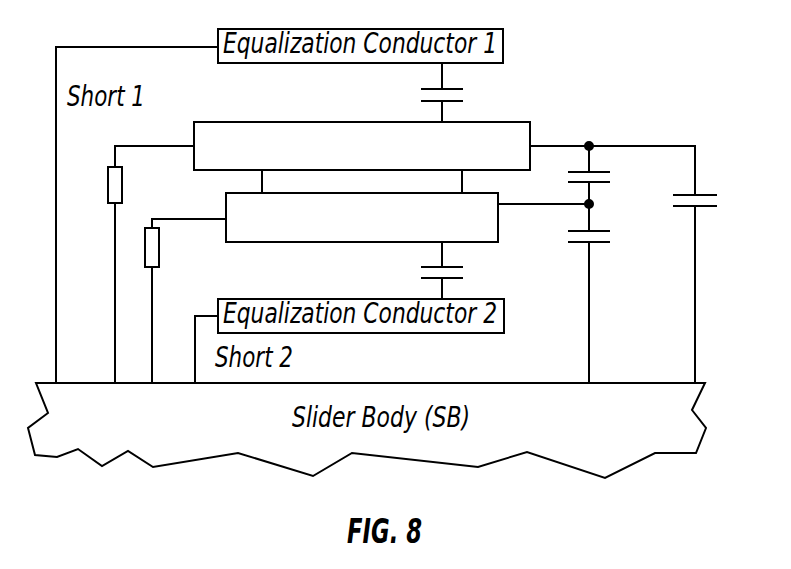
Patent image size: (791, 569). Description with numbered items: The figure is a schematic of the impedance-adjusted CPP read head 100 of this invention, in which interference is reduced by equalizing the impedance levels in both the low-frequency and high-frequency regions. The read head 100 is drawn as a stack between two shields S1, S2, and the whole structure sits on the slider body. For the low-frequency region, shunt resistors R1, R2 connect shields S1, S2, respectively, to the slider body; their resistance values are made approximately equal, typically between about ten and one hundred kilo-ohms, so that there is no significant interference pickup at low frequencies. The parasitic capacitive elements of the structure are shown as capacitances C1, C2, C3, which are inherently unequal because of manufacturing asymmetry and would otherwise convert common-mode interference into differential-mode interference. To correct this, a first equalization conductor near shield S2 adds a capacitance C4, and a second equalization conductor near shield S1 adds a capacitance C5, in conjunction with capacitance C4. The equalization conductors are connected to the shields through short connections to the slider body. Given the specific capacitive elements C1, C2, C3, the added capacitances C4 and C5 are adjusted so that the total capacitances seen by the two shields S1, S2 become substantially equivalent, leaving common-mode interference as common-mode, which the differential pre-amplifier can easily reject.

The read head 100 is at (331, 182).
The shield S1 is at (362, 217).
The shield S2 is at (362, 146).
The capacitive element C1 is at (610, 293).
The capacitive element C2 is at (712, 202).
The capacitive element C3 is at (610, 175).
The capacitance C4 is at (461, 92).
The capacitance C5 is at (461, 270).
The shunt resistor R1 is at (185, 301).
The shunt resistor R2 is at (131, 264).